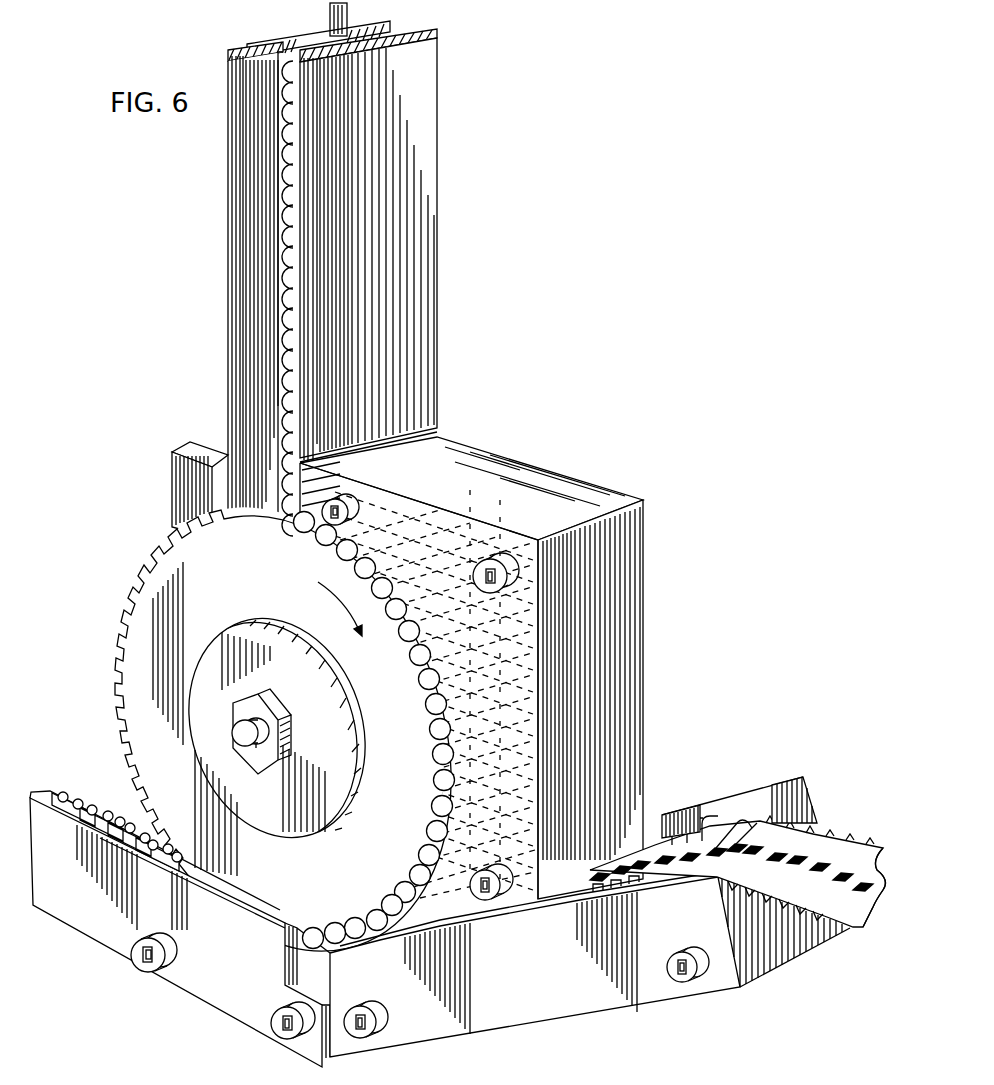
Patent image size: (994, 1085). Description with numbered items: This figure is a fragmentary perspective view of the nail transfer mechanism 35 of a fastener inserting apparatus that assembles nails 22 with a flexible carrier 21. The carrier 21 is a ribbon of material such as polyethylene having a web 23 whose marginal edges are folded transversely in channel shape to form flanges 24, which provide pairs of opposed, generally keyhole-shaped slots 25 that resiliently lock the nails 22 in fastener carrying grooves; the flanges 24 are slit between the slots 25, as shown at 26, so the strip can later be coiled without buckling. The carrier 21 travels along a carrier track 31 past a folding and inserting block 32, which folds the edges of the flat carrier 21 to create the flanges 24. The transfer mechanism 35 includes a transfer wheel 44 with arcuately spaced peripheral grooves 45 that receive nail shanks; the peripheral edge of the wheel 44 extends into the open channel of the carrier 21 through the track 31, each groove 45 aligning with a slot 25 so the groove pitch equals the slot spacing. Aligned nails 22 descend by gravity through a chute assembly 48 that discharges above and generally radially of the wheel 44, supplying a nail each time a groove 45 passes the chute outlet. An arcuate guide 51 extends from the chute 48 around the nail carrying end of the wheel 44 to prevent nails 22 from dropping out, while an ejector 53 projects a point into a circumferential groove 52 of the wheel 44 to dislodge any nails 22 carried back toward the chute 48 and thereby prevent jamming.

The carrier 21 is at (742, 881).
The nails 22 is at (283, 243).
The web 23 is at (820, 863).
The flanges 24 is at (695, 820).
The slots 25 is at (863, 847).
The slits 26 is at (813, 833).
The carrier track 31 is at (758, 815).
The folding and inserting block 32 is at (700, 850).
The nail transfer mechanism 35 is at (725, 553).
The transfer wheel 44 is at (271, 724).
The peripheral grooves 45 is at (117, 647).
The chute assembly 48 is at (423, 372).
The arcuate guide 51 is at (368, 567).
The circumferential groove 52 is at (321, 603).
The ejector 53 is at (172, 453).